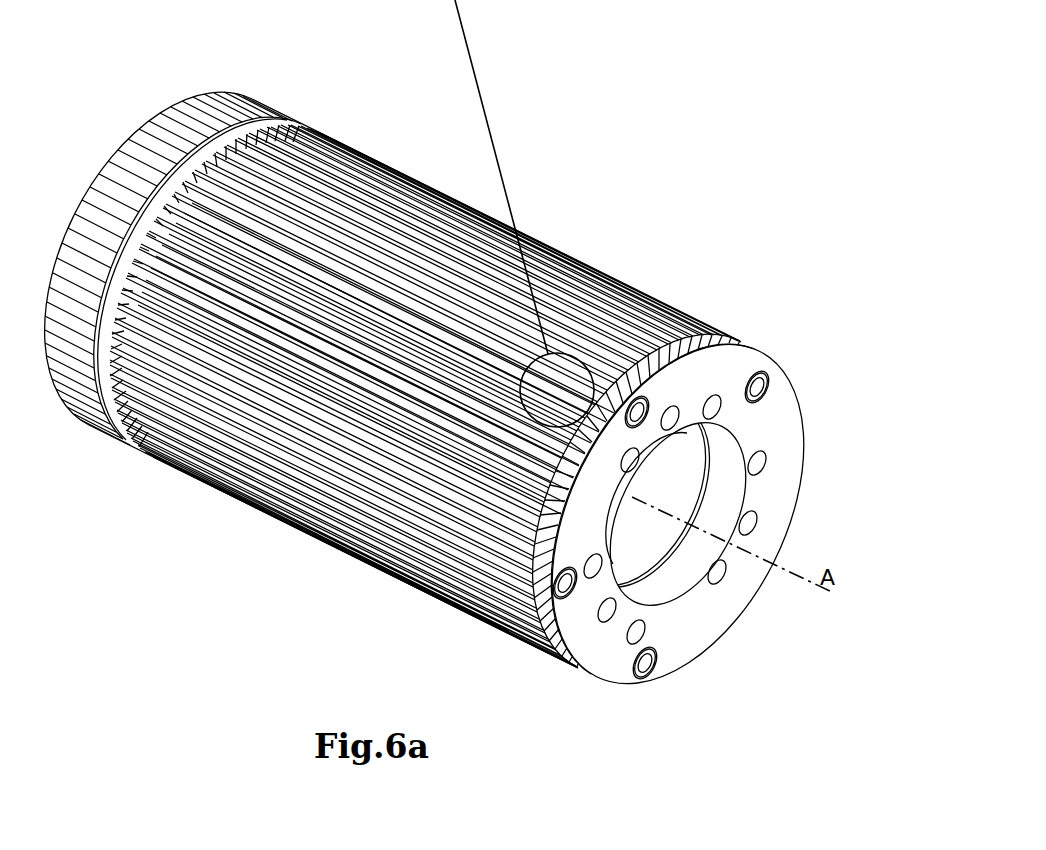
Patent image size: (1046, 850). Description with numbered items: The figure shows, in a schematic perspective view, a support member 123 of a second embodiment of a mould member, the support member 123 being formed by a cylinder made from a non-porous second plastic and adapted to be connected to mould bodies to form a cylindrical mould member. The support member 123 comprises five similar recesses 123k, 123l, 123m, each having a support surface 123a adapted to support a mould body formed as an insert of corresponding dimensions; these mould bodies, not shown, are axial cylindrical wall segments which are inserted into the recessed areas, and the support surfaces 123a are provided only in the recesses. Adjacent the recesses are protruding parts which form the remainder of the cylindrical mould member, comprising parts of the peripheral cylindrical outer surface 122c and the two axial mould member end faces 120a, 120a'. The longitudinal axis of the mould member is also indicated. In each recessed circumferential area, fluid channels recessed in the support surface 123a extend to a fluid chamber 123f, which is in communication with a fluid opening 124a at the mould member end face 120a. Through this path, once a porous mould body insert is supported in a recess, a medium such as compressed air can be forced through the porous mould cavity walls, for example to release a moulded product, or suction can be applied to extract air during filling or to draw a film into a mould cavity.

The axial mould member end face 120a is at (678, 513).
The axial mould member end face 120a' is at (173, 249).
The peripheral cylindrical outer surface 122c is at (285, 110).
The support member 123 is at (415, 340).
The support surface 123a is at (200, 178).
The fluid chamber 123f is at (622, 370).
The recess 123k is at (633, 288).
The recess 123l is at (563, 310).
The recess 123m is at (440, 523).
The fluid opening 124a is at (645, 663).